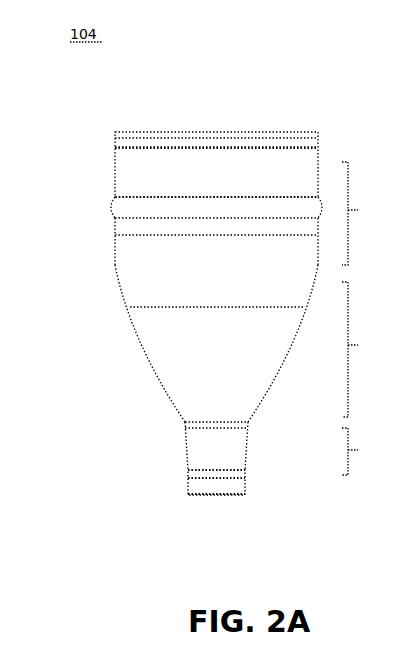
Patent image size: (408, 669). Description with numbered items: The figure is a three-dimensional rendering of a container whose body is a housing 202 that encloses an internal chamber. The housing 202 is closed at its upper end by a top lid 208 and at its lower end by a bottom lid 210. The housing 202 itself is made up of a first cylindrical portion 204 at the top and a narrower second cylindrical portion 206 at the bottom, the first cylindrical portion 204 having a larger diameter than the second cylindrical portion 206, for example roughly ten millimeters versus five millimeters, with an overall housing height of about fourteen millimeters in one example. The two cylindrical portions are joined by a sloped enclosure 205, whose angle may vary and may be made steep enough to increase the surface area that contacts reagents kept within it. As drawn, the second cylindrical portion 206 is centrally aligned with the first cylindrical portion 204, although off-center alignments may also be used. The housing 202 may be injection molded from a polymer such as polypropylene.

The housing 202 is at (121, 282).
The first cylindrical portion 204 is at (367, 213).
The sloped enclosure 205 is at (367, 349).
The second cylindrical portion 206 is at (367, 451).
The top lid 208 is at (115, 140).
The bottom lid 210 is at (187, 490).